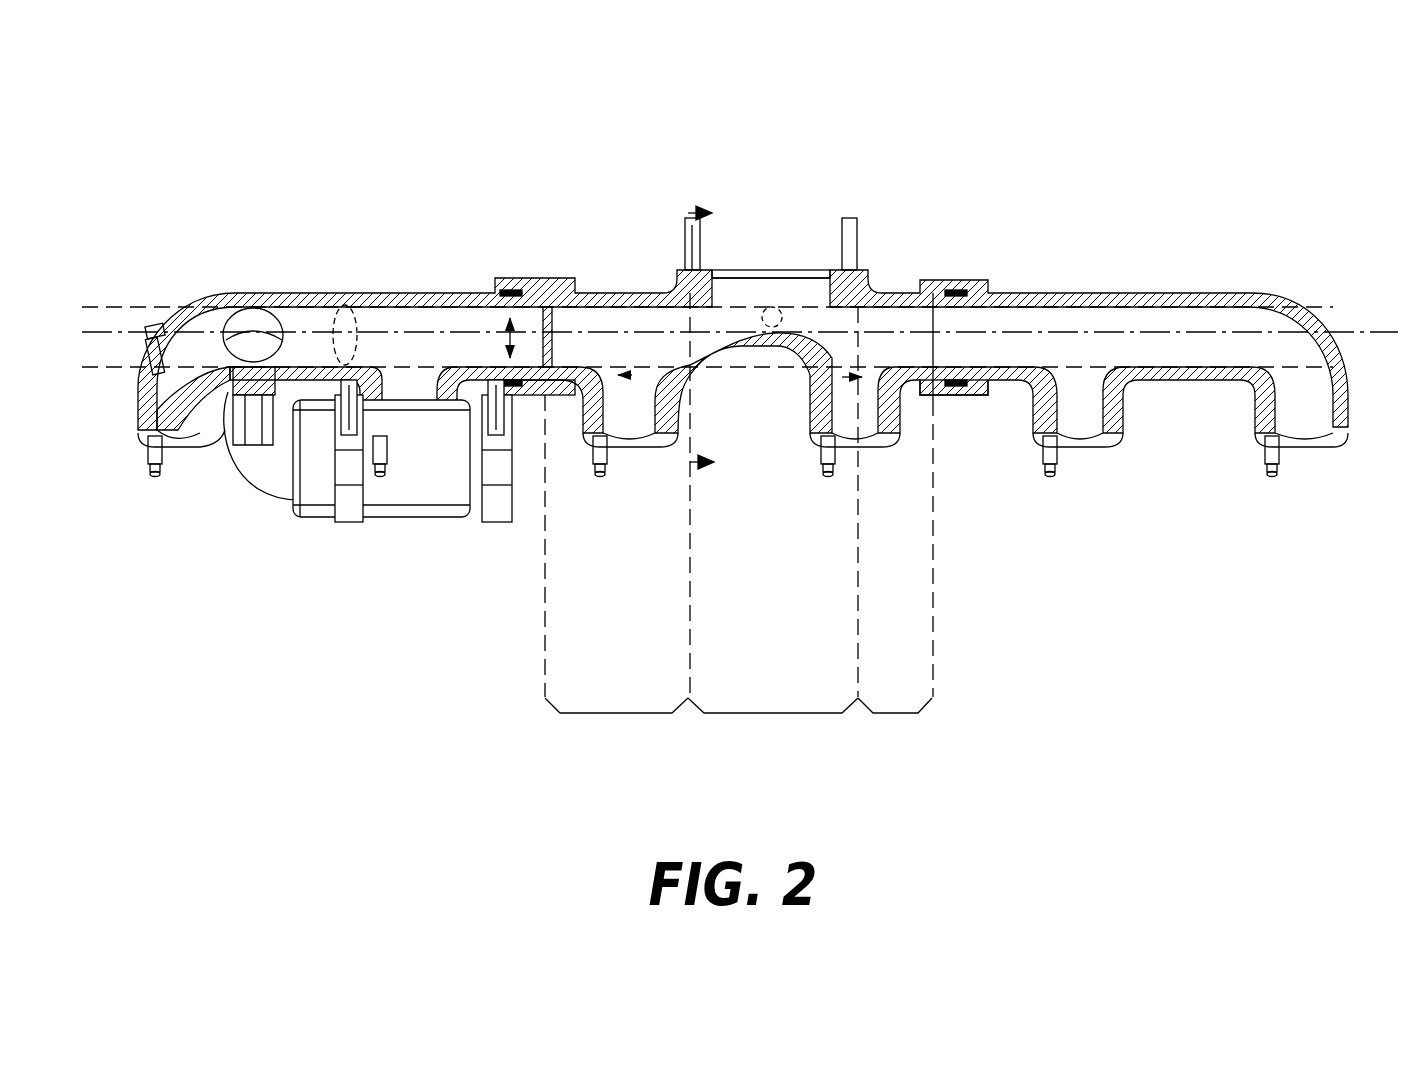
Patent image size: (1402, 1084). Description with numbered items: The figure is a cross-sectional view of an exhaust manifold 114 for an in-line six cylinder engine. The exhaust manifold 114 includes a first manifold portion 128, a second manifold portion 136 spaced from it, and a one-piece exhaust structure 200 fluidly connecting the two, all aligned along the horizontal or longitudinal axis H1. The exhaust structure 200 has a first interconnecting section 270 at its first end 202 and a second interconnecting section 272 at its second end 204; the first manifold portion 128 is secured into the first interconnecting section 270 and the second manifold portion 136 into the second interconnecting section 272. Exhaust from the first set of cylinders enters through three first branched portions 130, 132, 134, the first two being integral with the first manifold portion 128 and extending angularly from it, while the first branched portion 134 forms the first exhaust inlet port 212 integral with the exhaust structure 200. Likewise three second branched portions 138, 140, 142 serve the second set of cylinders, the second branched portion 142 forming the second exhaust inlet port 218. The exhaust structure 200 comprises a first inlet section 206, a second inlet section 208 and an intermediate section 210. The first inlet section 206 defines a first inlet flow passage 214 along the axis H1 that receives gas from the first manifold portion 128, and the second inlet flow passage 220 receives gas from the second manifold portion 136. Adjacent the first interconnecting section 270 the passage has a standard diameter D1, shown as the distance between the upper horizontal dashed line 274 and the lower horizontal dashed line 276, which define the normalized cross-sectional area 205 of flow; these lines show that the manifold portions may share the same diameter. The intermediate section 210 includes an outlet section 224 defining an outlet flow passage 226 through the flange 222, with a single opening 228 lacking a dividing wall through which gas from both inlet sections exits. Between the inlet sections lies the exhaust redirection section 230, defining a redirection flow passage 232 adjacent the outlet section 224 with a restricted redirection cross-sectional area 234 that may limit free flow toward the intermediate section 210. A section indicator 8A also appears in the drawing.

The exhaust manifold 114 is at (1233, 186).
The first manifold portion 128 is at (386, 300).
The first branched portion 130 is at (182, 408).
The first branched portion 132 is at (405, 412).
The first branched portion 134 is at (640, 435).
The second manifold portion 136 is at (1143, 343).
The second branched portion 138 is at (1302, 410).
The second branched portion 140 is at (1078, 415).
The second branched portion 142 is at (845, 445).
The exhaust structure 200 is at (665, 484).
The first end 202 is at (538, 268).
The second end 204 is at (945, 270).
The normalized cross-sectional area 205 is at (322, 302).
The first inlet section 206 is at (620, 715).
The second inlet section 208 is at (893, 715).
The intermediate section 210 is at (778, 715).
The first exhaust inlet port 212 is at (631, 412).
The first inlet flow passage 214 is at (588, 316).
The second exhaust inlet port 218 is at (825, 390).
The second inlet flow passage 220 is at (903, 345).
The flange 222 is at (832, 297).
The outlet section 224 is at (784, 283).
The outlet flow passage 226 is at (736, 283).
The opening 228 is at (765, 266).
The exhaust redirection section 230 is at (770, 350).
The redirection flow passage 232 is at (822, 342).
The redirection cross-sectional area 234 is at (748, 282).
The first interconnecting section 270 is at (558, 434).
The second interconnecting section 272 is at (978, 424).
The upper horizontal dashed line 274 is at (130, 300).
The lower horizontal dashed line 276 is at (97, 378).
The standard diameter D1 is at (469, 300).
The horizontal axis H1 is at (1358, 335).
The section line 8A is at (690, 258).